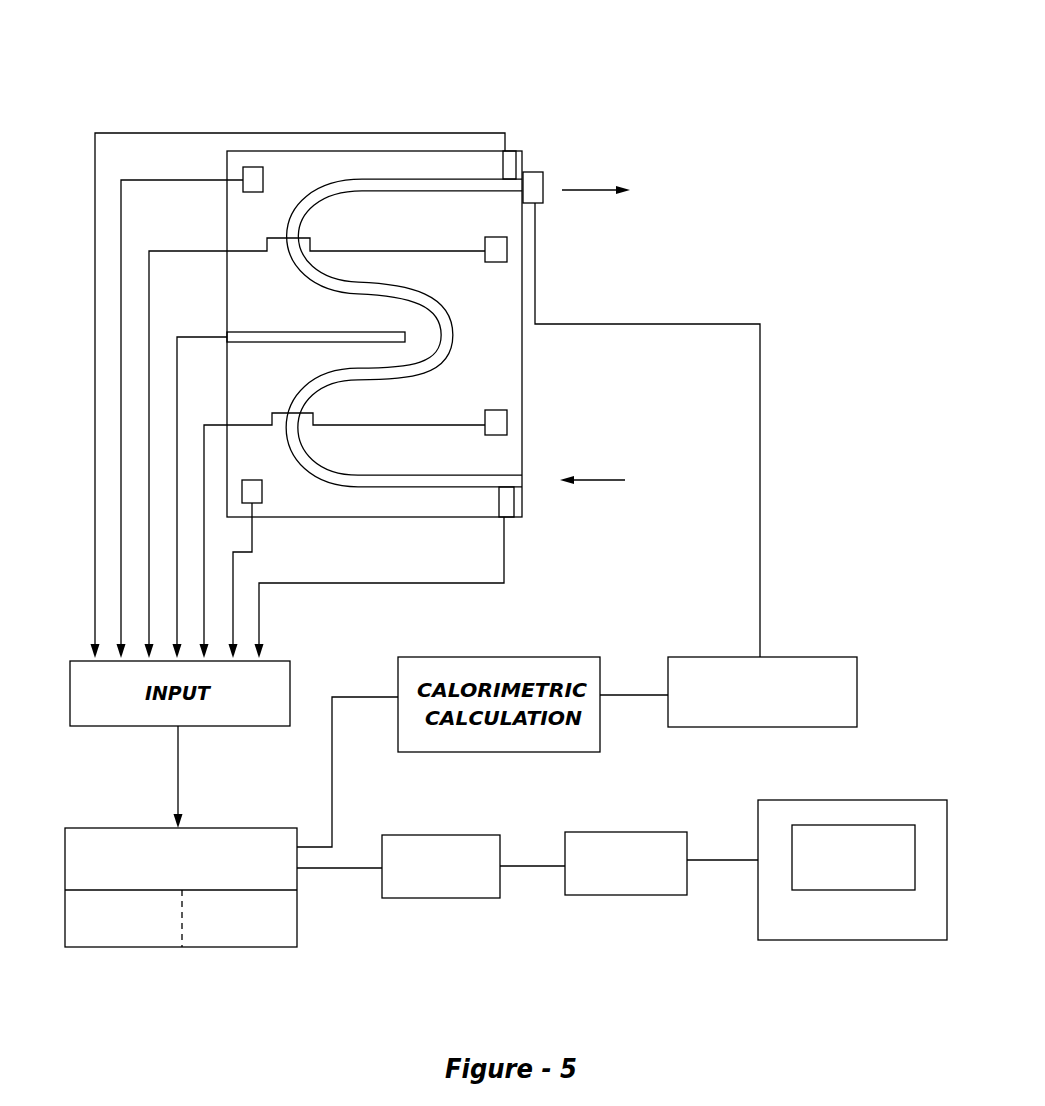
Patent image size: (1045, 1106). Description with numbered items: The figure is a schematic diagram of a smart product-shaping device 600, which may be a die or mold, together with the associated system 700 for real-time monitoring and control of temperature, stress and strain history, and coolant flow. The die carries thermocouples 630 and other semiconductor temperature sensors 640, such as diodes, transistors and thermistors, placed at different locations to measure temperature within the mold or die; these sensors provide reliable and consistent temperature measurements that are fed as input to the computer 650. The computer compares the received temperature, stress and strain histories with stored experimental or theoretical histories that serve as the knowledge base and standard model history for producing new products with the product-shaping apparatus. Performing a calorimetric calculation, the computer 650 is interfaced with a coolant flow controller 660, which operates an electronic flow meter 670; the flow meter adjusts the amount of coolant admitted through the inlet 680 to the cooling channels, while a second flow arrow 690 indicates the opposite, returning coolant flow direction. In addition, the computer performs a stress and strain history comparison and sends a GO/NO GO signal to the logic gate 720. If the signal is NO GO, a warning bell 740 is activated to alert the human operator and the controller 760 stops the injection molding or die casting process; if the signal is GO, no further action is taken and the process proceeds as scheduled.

The smart product-shaping device 600 is at (430, 75).
The thermocouples 630 is at (509, 164).
The semiconductor temperature sensors 640 is at (255, 167).
The computer 650 is at (181, 887).
The coolant flow controller 660 is at (762, 692).
The electronic flow meter 670 is at (535, 180).
The inlet 680 is at (596, 208).
The inlet flow direction 690 is at (592, 497).
The system 700 is at (790, 259).
The logic gate 720 is at (441, 866).
The warning bell 740 is at (626, 863).
The controller 760 is at (822, 942).